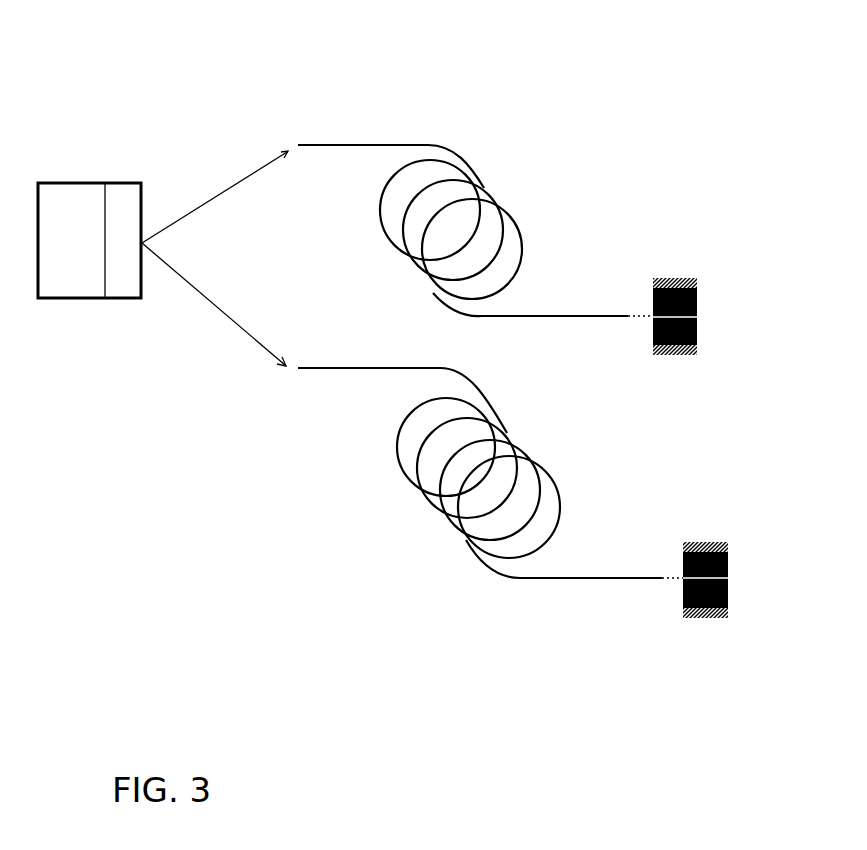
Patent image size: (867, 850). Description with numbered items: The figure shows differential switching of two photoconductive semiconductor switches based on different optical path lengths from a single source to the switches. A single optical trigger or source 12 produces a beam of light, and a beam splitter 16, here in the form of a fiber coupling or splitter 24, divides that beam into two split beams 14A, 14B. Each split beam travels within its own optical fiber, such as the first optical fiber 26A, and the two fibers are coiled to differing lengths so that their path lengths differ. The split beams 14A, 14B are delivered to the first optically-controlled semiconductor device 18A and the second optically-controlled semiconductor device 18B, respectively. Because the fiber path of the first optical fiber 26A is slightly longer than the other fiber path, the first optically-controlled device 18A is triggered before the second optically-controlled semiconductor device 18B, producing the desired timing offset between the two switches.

The optical source 12 is at (89, 240).
The fiber coupling or splitter 24 is at (118, 217).
The beam splitter 16 is at (125, 284).
The first split beam 14A is at (238, 175).
The second split beam 14B is at (248, 335).
The first optical fiber 26A is at (410, 133).
The first optically-controlled semiconductor device 18A is at (673, 278).
The second optically-controlled semiconductor device 18B is at (702, 615).